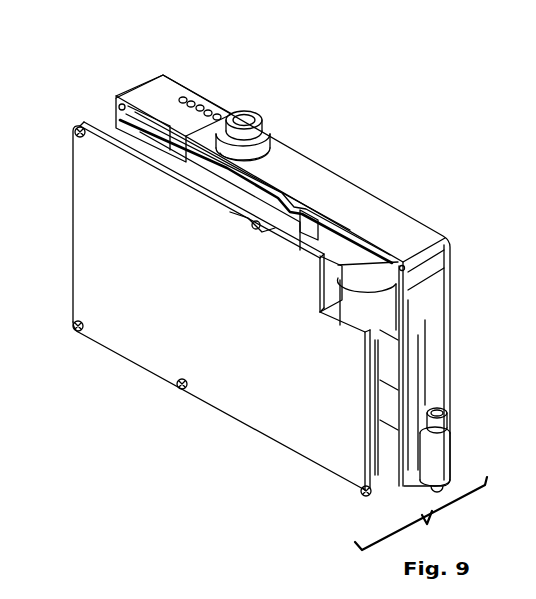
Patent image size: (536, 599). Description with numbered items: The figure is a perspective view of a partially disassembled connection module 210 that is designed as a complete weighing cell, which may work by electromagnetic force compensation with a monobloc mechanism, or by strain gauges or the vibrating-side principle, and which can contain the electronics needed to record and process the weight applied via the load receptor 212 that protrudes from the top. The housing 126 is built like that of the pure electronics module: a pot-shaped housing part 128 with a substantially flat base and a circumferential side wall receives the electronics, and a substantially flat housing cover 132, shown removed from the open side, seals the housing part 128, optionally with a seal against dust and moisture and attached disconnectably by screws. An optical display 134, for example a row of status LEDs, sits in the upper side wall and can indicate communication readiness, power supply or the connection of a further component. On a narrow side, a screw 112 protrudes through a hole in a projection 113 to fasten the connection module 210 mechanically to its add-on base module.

The connection module 210 is at (333, 93).
The housing 126 is at (417, 216).
The pot-shaped housing part 128 is at (438, 283).
The housing cover 132 is at (277, 432).
The optical display 134 is at (197, 98).
The load receptor 212 is at (244, 114).
The screw 112 is at (448, 420).
The projection 113 is at (436, 455).